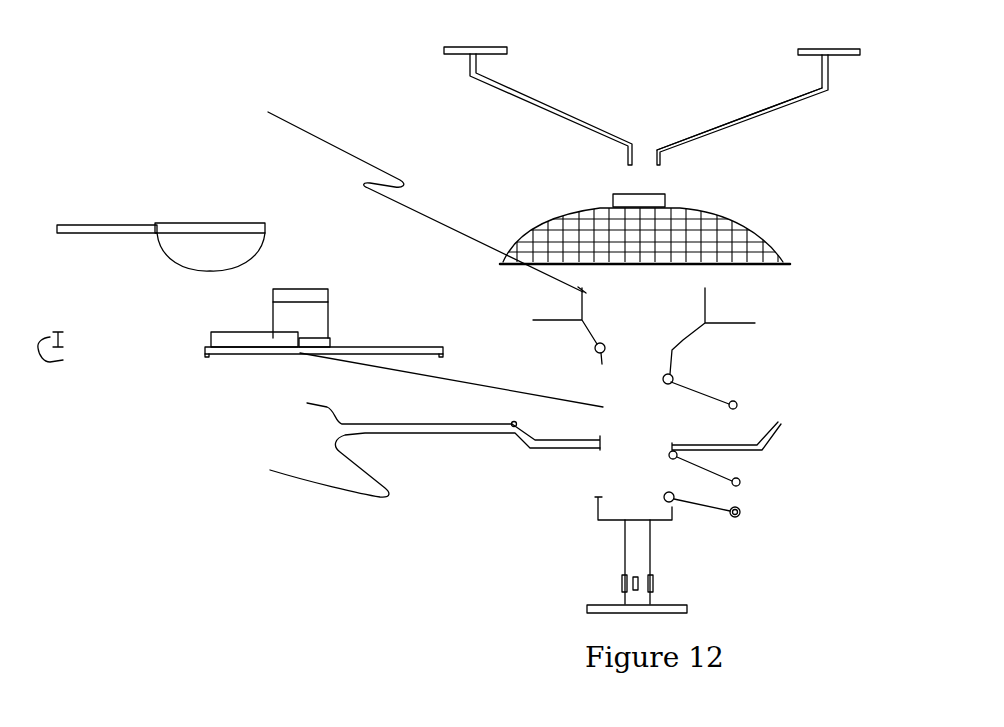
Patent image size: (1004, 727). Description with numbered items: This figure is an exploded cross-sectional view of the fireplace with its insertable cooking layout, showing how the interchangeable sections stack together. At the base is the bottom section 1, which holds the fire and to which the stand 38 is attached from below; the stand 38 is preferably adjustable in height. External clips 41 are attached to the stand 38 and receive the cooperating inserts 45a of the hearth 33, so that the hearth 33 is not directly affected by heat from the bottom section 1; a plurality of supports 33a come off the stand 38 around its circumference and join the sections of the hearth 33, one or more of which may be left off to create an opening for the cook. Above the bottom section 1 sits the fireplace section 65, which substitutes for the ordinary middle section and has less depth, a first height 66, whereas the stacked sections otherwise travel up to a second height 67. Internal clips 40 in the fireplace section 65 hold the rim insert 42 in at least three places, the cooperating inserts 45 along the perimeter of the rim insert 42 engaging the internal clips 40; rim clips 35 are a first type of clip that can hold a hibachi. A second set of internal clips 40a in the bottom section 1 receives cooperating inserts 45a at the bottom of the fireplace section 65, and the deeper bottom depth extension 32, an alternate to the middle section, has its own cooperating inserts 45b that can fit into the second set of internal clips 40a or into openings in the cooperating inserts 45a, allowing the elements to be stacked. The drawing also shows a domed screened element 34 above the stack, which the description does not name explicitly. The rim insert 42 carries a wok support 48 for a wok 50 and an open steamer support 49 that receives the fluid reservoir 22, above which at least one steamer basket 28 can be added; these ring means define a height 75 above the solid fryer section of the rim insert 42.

The bottom section 1 is at (712, 531).
The fluid reservoir 22 is at (293, 303).
The steamer basket 28 is at (310, 300).
The bottom depth extension 32 is at (680, 340).
The hearth 33 is at (850, 50).
The supports 33a is at (773, 113).
The dome screen 34 is at (672, 207).
The rim clips 35 is at (512, 424).
The stand 38 is at (642, 553).
The internal clips 40 is at (525, 423).
The second set of internal clips 40a is at (597, 510).
The external clips 41 is at (620, 582).
The rim insert 42 is at (257, 358).
The cooperating inserts 45 is at (443, 360).
The cooperating inserts 45a is at (636, 157).
The cooperating inserts 45b is at (738, 405).
The wok support 48 is at (210, 343).
The open steamer support 49 is at (317, 342).
The wok 50 is at (250, 237).
The fireplace section 65 is at (419, 465).
The first height 66 is at (439, 422).
The second height 67 is at (413, 197).
The height 75 is at (67, 351).